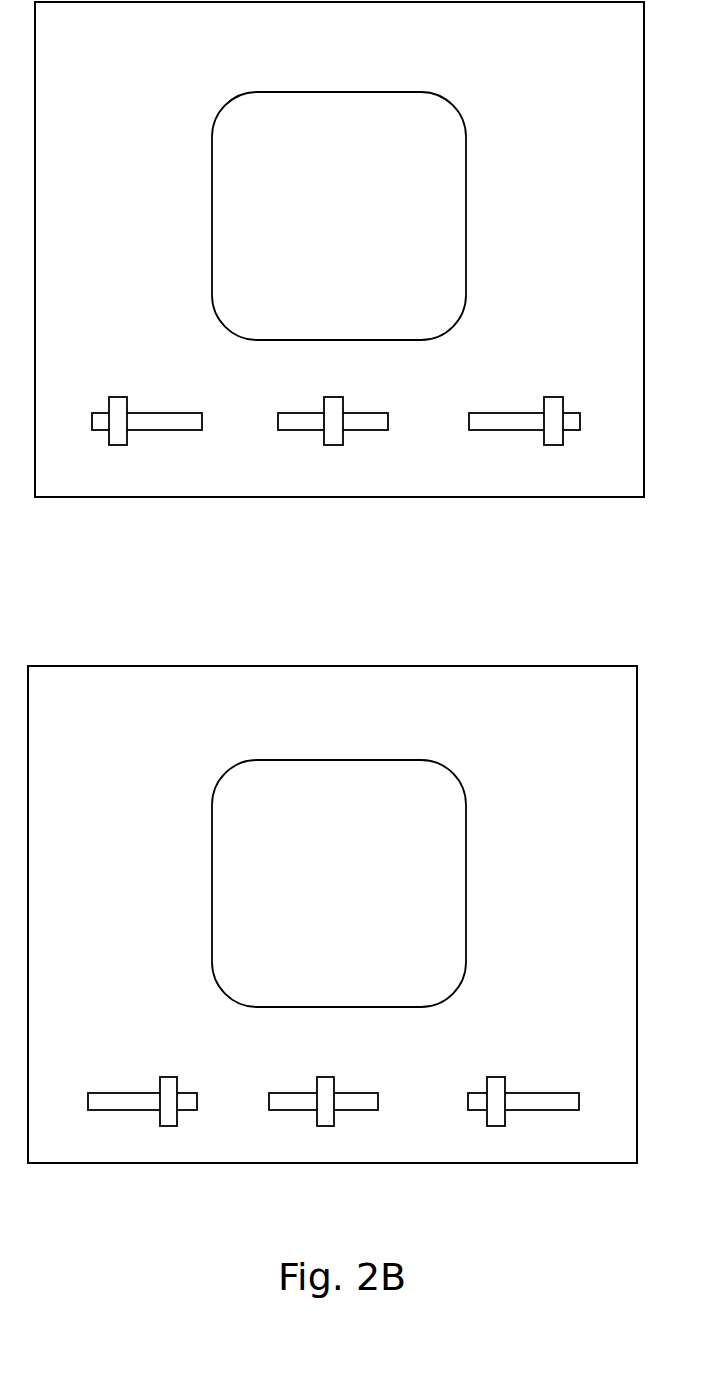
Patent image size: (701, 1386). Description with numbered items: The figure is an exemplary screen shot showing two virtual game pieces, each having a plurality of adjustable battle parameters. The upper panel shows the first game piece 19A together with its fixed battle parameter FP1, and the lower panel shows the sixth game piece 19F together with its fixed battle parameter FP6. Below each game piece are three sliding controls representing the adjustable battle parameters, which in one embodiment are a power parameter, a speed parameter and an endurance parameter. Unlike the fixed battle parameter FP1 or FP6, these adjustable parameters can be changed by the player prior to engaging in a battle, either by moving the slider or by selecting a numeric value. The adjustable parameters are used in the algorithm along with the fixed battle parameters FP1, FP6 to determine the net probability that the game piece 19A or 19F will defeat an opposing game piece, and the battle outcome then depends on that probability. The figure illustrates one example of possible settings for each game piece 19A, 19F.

The first game piece 19A is at (297, 125).
The fixed battle parameter FP1 is at (450, 100).
The sixth game piece 19F is at (275, 792).
The fixed battle parameter FP6 is at (448, 770).